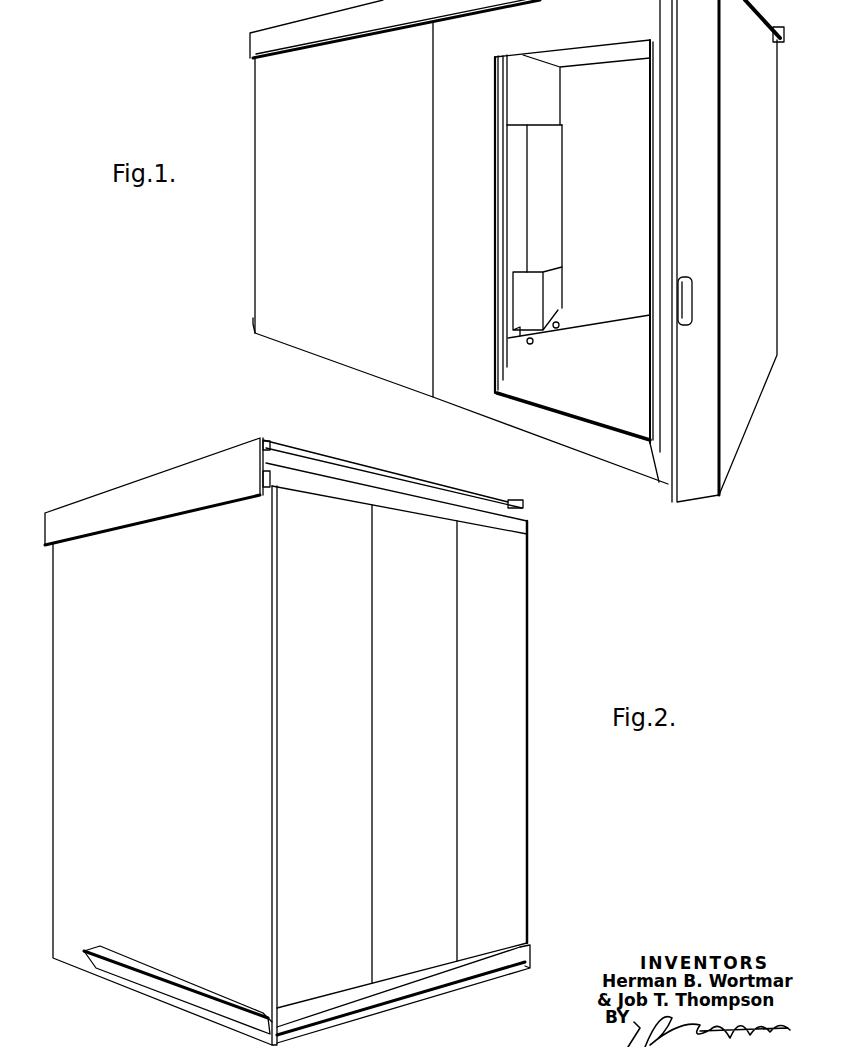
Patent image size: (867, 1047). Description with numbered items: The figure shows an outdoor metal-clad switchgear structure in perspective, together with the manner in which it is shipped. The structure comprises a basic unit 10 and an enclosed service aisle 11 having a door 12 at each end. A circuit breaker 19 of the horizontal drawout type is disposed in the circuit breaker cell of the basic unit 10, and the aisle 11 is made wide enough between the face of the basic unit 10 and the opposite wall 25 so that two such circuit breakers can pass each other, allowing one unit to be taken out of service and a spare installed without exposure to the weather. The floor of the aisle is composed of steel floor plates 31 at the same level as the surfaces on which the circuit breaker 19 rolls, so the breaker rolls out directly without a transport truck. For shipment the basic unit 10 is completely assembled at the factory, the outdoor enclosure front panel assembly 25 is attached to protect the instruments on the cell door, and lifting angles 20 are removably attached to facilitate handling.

In FIG. 1, the basic unit 10 is at (362, 190).
In FIG. 2, the basic unit 10 is at (178, 649).
In FIG. 1, the enclosed service aisle 11 is at (598, 26).
In FIG. 1, the door 12 is at (679, 496).
In FIG. 1, the circuit breaker 19 is at (548, 200).
In FIG. 2, the lifting angles 20 is at (187, 987).
In FIG. 1, the outdoor enclosure front panel assembly 25 is at (758, 201).
In FIG. 2, the outdoor enclosure front panel assembly 25 is at (512, 660).
In FIG. 1, the floor plates 31 is at (548, 392).